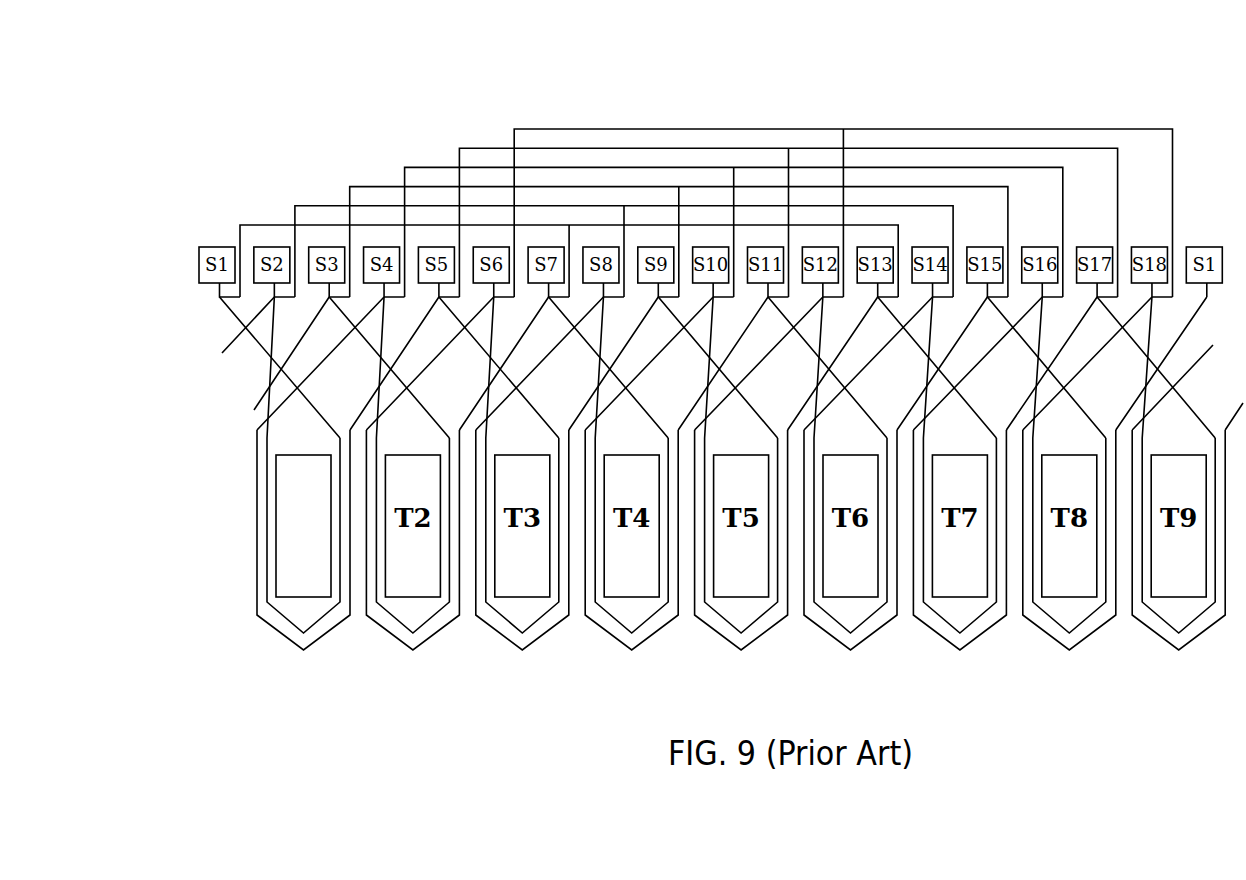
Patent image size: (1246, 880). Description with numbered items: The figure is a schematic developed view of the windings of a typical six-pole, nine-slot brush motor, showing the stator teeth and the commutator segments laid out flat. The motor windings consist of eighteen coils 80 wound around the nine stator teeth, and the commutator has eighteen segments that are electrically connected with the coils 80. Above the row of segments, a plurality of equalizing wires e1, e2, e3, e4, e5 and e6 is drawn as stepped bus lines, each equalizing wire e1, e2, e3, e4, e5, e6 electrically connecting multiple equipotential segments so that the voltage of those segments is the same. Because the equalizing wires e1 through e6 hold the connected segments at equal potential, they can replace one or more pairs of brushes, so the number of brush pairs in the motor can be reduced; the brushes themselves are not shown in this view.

The coils 80 is at (257, 520).
The equalizing wire e1 is at (263, 225).
The equalizing wire e2 is at (323, 206).
The equalizing wire e3 is at (380, 187).
The equalizing wire e4 is at (428, 167).
The equalizing wire e5 is at (491, 148).
The equalizing wire e6 is at (557, 129).